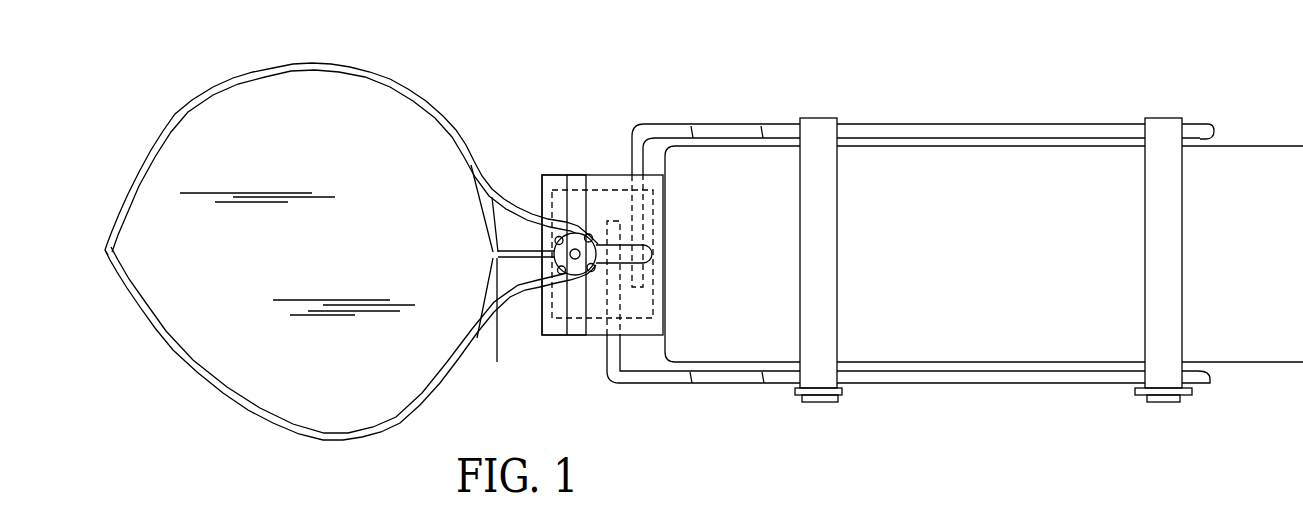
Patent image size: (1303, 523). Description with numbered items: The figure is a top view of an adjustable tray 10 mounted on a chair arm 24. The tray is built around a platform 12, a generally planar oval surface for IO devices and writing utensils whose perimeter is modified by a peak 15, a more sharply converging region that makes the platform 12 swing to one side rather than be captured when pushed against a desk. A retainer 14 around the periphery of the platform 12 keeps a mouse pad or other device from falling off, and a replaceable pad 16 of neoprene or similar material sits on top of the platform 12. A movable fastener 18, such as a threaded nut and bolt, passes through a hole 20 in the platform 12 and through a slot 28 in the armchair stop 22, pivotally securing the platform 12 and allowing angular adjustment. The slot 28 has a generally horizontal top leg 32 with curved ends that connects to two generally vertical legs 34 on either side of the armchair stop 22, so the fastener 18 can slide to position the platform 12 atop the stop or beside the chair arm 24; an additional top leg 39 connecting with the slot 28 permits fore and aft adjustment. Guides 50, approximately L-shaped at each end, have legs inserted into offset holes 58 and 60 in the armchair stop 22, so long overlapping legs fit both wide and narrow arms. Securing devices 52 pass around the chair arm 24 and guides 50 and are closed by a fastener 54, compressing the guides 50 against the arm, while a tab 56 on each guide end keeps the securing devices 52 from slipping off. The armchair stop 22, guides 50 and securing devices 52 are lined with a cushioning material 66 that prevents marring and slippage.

The adjustable tray 10 is at (636, 76).
The platform 12 is at (497, 352).
The retainer 14 is at (380, 78).
The peak 15 is at (104, 250).
The pad 16 is at (220, 118).
The movable fastener 18 is at (560, 241).
The hole 20 is at (571, 257).
The armchair stop 22 is at (605, 175).
The chair arm 24 is at (1243, 145).
The slot 28 is at (567, 304).
The top leg 32 is at (573, 203).
The vertical legs 34 is at (575, 180).
The top leg 39 is at (650, 256).
The guides 50 is at (930, 127).
The securing device 52 is at (830, 298).
The fastener 54 is at (820, 392).
The tab 56 is at (1210, 120).
The hole 58 is at (638, 182).
The hole 60 is at (617, 327).
The cushioning material 66 is at (945, 139).